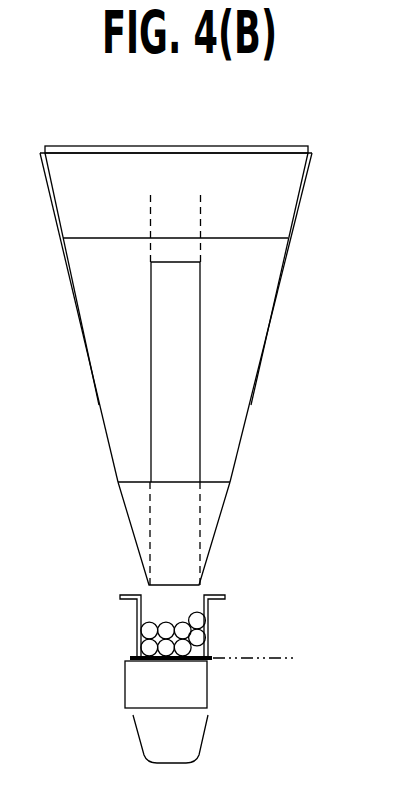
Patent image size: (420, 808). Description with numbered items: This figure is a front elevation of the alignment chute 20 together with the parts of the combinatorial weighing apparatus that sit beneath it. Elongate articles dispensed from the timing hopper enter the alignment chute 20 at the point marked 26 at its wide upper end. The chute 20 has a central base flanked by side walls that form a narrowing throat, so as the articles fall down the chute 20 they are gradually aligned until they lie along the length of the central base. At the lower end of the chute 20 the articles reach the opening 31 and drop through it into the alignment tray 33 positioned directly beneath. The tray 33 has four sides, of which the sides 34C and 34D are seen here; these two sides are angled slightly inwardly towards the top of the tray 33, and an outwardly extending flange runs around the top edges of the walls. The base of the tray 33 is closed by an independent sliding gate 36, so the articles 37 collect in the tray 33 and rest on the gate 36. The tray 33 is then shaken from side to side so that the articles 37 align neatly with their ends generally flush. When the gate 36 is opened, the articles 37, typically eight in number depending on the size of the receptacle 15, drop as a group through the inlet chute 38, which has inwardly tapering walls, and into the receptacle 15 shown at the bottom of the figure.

The chute entry point 26 is at (127, 131).
The alignment chute 20 is at (93, 389).
The opening 31 is at (181, 588).
The tray side 34C is at (136, 626).
The tray side 34D is at (211, 614).
The alignment tray 33 is at (211, 637).
The articles 37 is at (183, 650).
The sliding gate 36 is at (214, 664).
The inlet chute 38 is at (124, 698).
The receptacle 15 is at (200, 752).